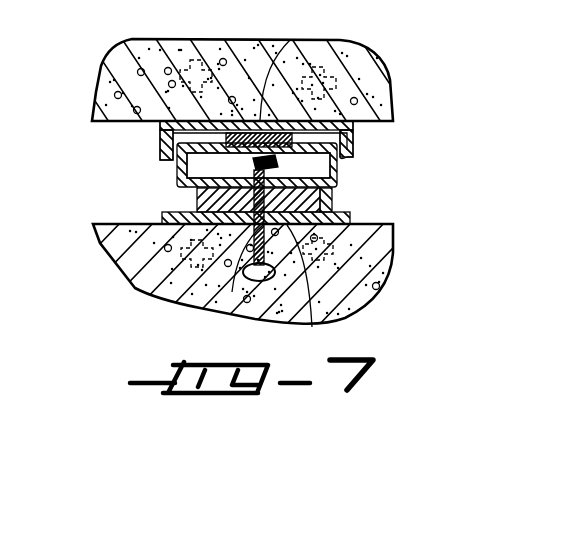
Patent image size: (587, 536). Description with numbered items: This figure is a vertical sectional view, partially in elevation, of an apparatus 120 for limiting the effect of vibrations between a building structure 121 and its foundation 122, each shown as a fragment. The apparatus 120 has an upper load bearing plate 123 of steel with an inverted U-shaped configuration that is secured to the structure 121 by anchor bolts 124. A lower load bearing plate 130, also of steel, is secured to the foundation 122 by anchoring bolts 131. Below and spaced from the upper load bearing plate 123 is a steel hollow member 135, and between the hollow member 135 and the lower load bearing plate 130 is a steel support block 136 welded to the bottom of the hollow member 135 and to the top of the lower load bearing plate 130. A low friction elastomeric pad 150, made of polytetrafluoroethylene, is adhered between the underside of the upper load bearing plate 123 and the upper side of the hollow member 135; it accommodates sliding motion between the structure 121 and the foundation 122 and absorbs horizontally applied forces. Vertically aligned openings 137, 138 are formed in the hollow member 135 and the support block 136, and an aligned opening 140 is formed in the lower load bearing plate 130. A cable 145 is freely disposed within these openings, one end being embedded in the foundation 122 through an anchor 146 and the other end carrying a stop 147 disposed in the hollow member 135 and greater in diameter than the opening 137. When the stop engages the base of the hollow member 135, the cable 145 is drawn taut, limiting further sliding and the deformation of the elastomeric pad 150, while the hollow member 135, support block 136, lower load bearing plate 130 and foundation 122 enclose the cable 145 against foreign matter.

The apparatus 120 is at (290, 190).
The building structure 121 is at (127, 52).
The foundation 122 is at (122, 282).
The upper load bearing plate 123 is at (160, 132).
The anchor bolts 124 is at (342, 58).
The lower load bearing plate 130 is at (162, 216).
The anchoring bolts 131 is at (340, 247).
The hollow member 135 is at (175, 163).
The support block 136 is at (197, 200).
The opening 137 is at (257, 165).
The opening 138 is at (332, 201).
The opening 140 is at (311, 310).
The cable 145 is at (236, 296).
The anchor 146 is at (258, 284).
The stop 147 is at (337, 170).
The elastomeric pad 150 is at (290, 40).